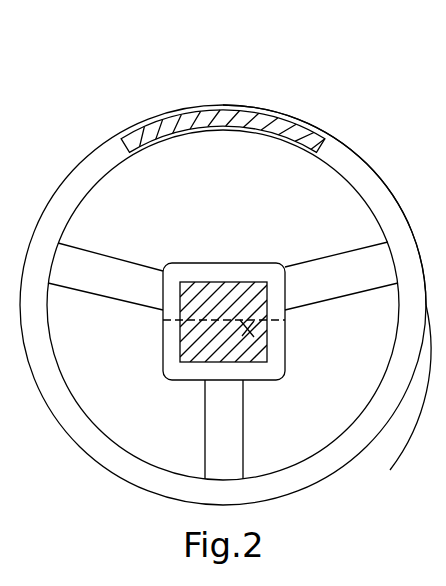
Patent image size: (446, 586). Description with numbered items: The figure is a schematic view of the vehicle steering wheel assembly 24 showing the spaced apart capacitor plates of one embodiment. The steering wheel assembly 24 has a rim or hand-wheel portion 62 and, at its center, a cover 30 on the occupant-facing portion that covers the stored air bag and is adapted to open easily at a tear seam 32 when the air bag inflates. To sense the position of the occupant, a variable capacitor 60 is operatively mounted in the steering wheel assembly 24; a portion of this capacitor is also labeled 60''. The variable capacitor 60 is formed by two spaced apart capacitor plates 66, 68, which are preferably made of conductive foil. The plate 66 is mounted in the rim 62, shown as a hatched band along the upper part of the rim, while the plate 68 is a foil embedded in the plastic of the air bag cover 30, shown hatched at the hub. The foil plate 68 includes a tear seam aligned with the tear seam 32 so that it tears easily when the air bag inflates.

The steering wheel assembly 24 is at (87, 112).
The cover 30 is at (255, 275).
The tear seam 32 is at (248, 333).
The variable capacitor 60 is at (223, 294).
The rim portion 60'' is at (418, 388).
The rim or hand-wheel portion 62 is at (376, 194).
The capacitor plate 66 is at (235, 118).
The capacitor plate 68 is at (208, 297).